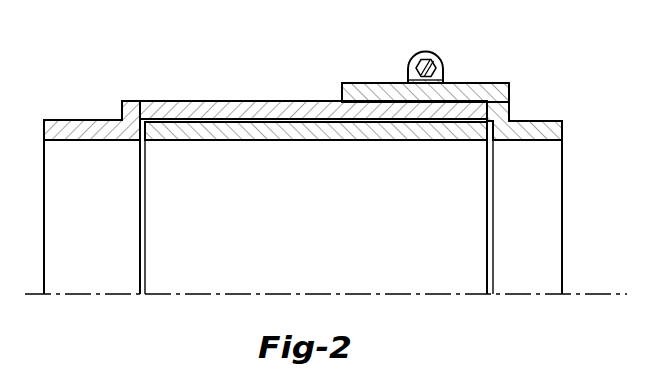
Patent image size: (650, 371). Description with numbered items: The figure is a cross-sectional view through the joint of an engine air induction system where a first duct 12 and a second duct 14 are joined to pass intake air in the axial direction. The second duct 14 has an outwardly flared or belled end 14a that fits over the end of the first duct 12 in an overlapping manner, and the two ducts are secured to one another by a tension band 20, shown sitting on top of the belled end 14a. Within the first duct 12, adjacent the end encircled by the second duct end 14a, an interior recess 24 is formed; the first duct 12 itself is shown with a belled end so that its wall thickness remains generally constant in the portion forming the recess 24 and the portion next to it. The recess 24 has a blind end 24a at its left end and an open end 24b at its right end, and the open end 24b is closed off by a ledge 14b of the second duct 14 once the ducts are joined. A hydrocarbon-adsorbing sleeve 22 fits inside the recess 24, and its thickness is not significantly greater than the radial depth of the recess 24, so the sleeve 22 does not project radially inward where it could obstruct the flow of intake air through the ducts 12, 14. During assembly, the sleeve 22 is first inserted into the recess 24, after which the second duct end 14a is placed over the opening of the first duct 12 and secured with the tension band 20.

The first duct 12 is at (67, 118).
The second duct 14 is at (556, 121).
The belled end of second duct 14a is at (360, 90).
The ledge of second duct 14b is at (492, 130).
The tension band 20 is at (426, 52).
The hydrocarbon-adsorbing sleeve 22 is at (381, 133).
The interior recess 24 is at (283, 128).
The blind end of recess 24a is at (153, 118).
The open end of recess 24b is at (495, 111).